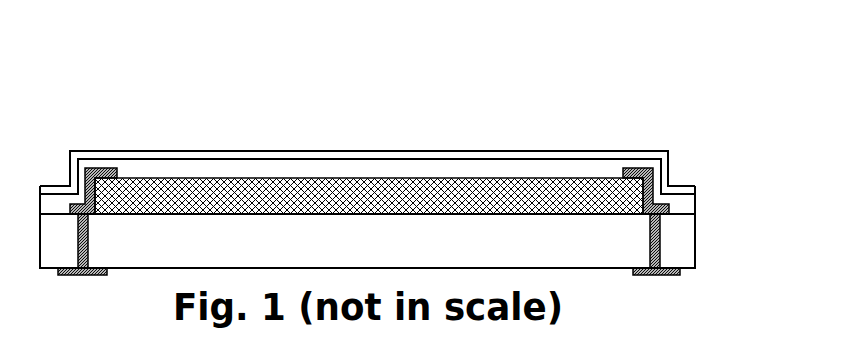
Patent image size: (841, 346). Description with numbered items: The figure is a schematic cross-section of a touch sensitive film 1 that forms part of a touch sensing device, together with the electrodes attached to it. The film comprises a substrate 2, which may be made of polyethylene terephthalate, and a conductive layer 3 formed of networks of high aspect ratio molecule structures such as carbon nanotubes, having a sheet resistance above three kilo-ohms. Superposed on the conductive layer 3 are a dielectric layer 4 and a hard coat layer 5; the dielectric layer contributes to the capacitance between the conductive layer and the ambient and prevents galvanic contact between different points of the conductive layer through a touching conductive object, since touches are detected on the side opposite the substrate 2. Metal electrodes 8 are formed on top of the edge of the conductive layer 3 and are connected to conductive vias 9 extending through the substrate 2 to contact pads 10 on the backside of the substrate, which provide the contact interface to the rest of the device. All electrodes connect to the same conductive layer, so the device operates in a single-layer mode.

The touch sensitive film 1 is at (377, 130).
The substrate 2 is at (148, 252).
The conductive layer 3 is at (564, 186).
The dielectric layer 4 is at (300, 168).
The hard coat layer 5 is at (136, 157).
The metal electrodes 8 is at (650, 180).
The conductive vias 9 is at (661, 238).
The contact pads 10 is at (673, 275).